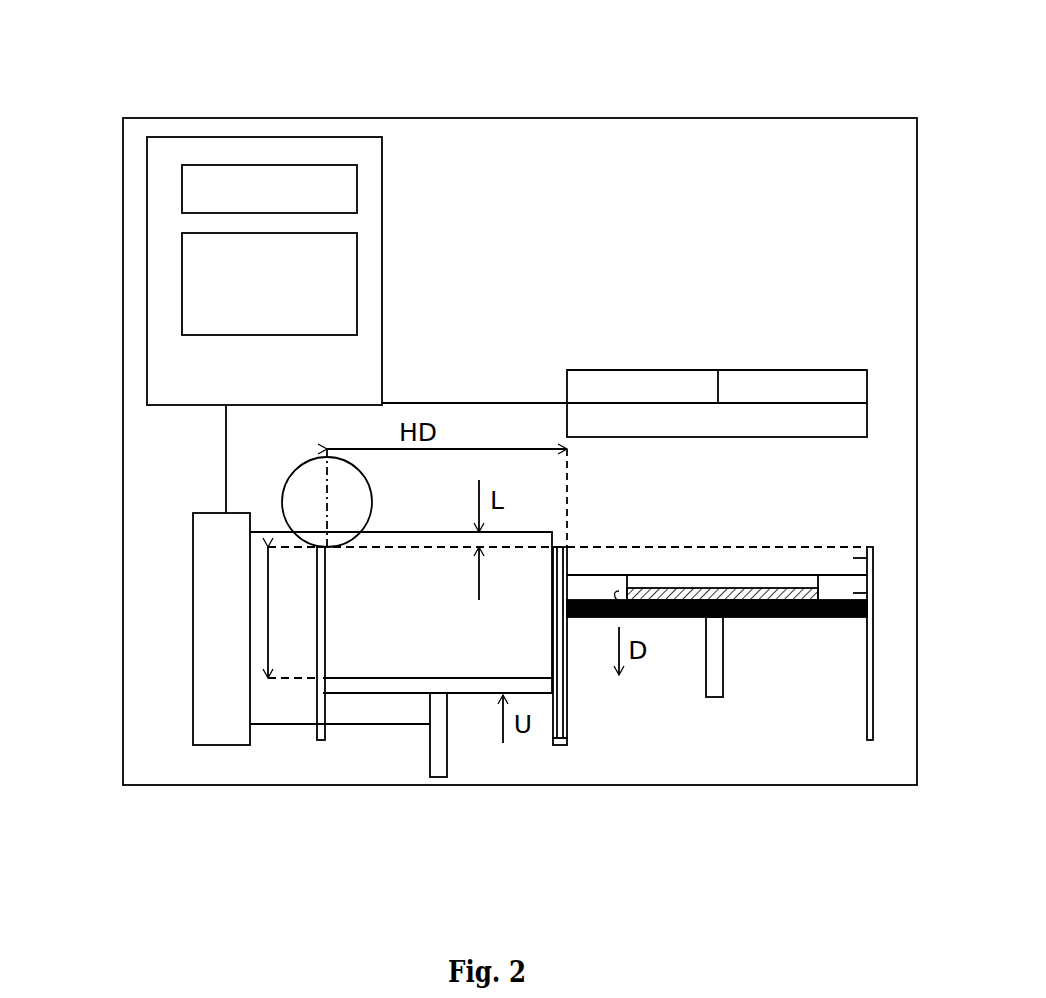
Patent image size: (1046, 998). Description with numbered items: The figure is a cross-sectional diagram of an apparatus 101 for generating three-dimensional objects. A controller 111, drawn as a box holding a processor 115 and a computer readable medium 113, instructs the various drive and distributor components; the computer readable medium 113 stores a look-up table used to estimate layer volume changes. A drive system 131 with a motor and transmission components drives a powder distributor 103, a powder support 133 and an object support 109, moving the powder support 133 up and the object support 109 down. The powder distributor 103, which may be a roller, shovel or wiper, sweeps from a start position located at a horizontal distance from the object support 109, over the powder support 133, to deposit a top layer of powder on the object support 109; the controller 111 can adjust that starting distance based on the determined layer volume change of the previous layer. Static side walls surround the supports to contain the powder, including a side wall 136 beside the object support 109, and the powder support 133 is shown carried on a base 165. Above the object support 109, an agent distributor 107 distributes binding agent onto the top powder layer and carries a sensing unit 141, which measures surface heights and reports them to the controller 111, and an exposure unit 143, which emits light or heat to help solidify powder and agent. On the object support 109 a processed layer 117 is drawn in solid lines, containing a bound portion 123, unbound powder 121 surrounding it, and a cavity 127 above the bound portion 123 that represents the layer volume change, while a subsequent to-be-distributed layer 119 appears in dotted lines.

The apparatus 101 is at (325, 80).
The controller 111 is at (225, 138).
The processor 115 is at (358, 192).
The computer readable medium 113 is at (182, 278).
The agent distributor 107 is at (717, 405).
The sensing unit 141 is at (702, 385).
The exposure unit 143 is at (823, 385).
The drive system 131 is at (222, 713).
The powder distributor 103 is at (327, 498).
The powder support 133 is at (462, 687).
The rod base 165 is at (567, 742).
The object support 109 is at (762, 617).
The cavity 127 is at (732, 583).
The unbound powder 121 is at (838, 587).
The to-be-distributed layer 119 is at (855, 558).
The processed layer 117 is at (855, 593).
The bound portion 123 is at (737, 617).
The side wall 136 is at (870, 742).